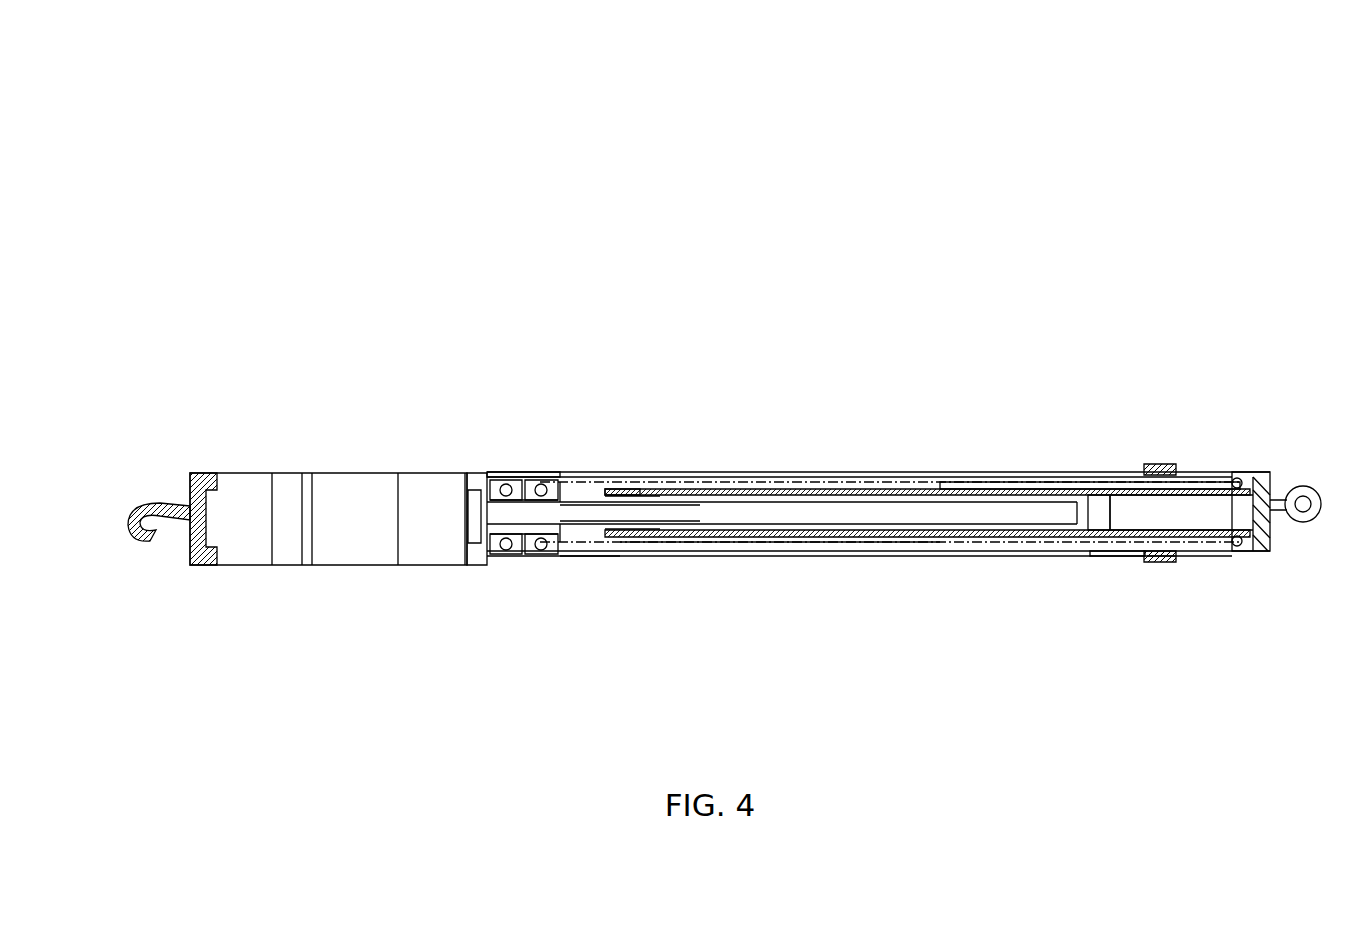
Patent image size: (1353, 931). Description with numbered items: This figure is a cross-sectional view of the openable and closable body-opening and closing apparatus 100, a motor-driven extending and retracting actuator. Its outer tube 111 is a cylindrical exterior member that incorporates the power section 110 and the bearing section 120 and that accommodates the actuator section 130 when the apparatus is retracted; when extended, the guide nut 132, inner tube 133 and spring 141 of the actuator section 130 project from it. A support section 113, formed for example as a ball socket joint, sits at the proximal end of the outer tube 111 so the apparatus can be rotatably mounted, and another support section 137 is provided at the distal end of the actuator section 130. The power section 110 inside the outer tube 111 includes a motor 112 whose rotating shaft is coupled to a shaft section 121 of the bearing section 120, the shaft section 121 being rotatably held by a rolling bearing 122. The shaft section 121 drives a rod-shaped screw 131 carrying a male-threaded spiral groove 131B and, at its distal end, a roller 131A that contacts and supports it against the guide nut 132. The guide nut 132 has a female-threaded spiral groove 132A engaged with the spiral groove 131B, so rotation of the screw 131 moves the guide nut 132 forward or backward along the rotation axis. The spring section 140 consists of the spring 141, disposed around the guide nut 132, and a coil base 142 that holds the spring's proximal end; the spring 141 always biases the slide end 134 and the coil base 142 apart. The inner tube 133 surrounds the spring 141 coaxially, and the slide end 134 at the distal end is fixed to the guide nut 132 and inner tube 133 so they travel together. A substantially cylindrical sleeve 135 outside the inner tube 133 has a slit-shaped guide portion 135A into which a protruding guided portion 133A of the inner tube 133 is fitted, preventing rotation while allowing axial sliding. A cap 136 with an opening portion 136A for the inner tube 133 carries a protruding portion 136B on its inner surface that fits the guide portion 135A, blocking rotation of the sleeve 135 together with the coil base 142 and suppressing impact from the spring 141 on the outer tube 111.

The openable and closable body-opening and closing apparatus 100 is at (1213, 144).
The power section 110 is at (492, 336).
The outer tube 111 is at (260, 468).
The motor 112 is at (428, 470).
The support section 113 is at (135, 503).
The bearing section 120 is at (597, 678).
The shaft section 121 is at (488, 563).
The bearing 122 is at (512, 563).
The actuator section 130 is at (518, 332).
The screw 131 is at (588, 473).
The roller 131A is at (1117, 552).
The spiral groove 131B is at (560, 472).
The guide nut 132 is at (664, 476).
The spiral groove 132A is at (633, 477).
The inner tube 133 is at (818, 472).
The guided portion 133A is at (655, 476).
The slide end 134 is at (1262, 476).
The sleeve 135 is at (935, 471).
The guide portion 135A is at (1010, 472).
The cap 136 is at (1156, 466).
The opening portion 136A is at (1183, 555).
The protruding portion 136B is at (1163, 466).
The support section 137 is at (1305, 482).
The spring section 140 is at (957, 675).
The spring 141 is at (878, 557).
The coil base 142 is at (552, 560).